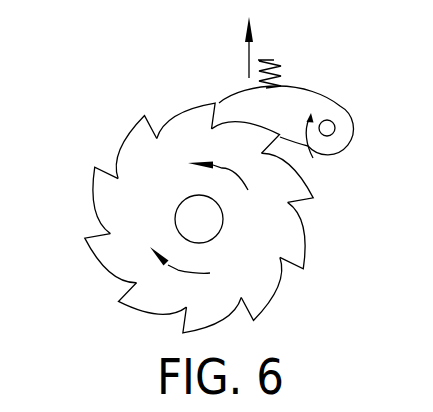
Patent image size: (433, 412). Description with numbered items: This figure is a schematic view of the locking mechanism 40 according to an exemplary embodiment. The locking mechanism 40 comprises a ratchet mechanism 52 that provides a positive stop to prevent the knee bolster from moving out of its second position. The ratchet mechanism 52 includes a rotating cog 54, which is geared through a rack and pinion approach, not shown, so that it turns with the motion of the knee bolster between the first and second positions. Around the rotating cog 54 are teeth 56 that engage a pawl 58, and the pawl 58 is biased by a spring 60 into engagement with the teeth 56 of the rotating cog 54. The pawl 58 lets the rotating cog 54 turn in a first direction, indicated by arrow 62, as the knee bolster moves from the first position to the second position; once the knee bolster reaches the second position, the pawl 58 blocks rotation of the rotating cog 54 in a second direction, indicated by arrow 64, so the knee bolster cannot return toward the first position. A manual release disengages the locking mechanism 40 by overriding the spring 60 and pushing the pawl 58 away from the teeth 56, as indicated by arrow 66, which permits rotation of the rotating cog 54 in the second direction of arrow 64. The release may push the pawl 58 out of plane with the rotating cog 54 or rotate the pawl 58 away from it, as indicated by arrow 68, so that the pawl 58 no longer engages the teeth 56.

The locking mechanism 40 is at (100, 96).
The ratchet mechanism 52 is at (135, 216).
The rotating cog 54 is at (300, 267).
The teeth 56 is at (295, 192).
The pawl 58 is at (343, 118).
The spring 60 is at (280, 78).
The arrow indicating first direction 62 is at (222, 168).
The arrow indicating second direction 64 is at (179, 271).
The arrow indicating pawl release motion 66 is at (249, 58).
The arrow indicating pawl rotation 68 is at (313, 158).